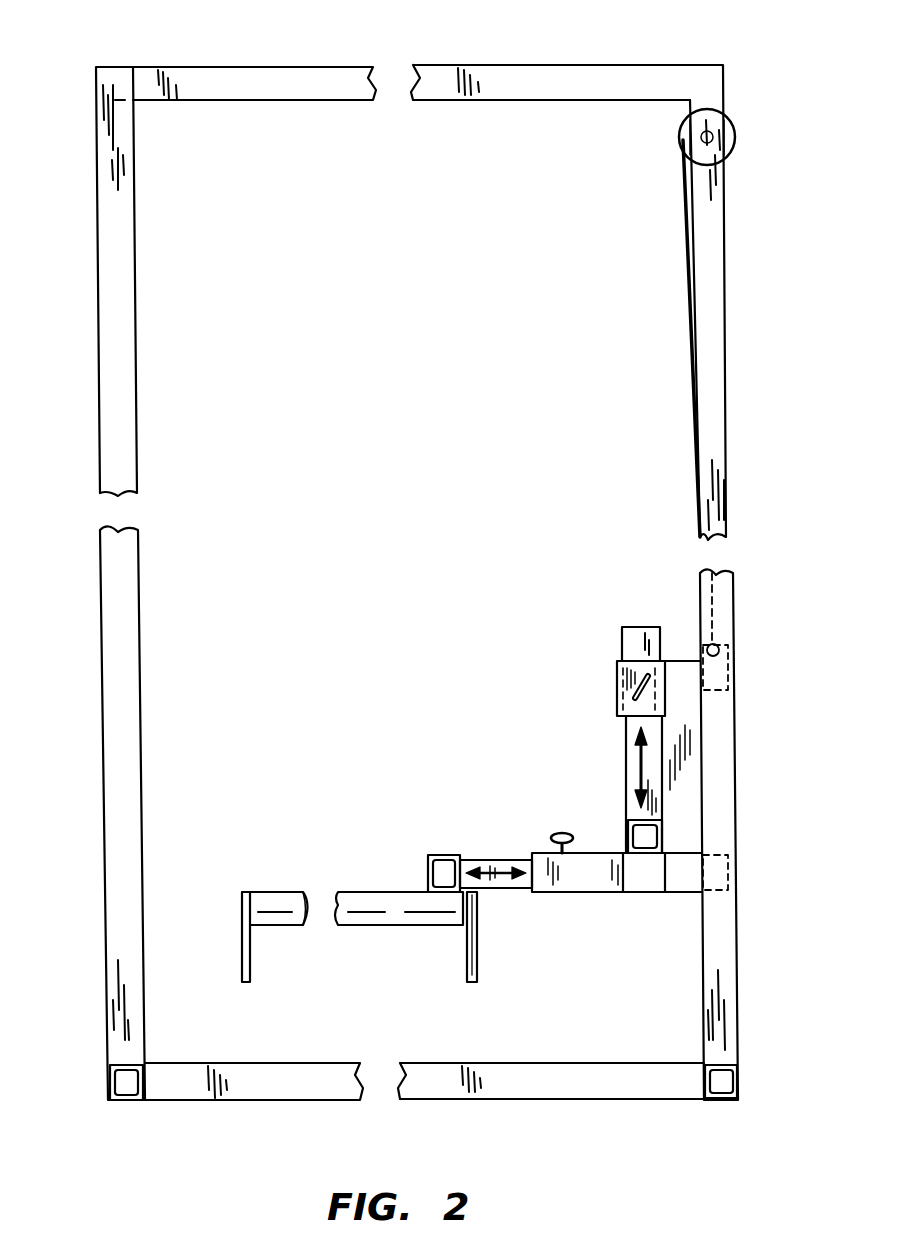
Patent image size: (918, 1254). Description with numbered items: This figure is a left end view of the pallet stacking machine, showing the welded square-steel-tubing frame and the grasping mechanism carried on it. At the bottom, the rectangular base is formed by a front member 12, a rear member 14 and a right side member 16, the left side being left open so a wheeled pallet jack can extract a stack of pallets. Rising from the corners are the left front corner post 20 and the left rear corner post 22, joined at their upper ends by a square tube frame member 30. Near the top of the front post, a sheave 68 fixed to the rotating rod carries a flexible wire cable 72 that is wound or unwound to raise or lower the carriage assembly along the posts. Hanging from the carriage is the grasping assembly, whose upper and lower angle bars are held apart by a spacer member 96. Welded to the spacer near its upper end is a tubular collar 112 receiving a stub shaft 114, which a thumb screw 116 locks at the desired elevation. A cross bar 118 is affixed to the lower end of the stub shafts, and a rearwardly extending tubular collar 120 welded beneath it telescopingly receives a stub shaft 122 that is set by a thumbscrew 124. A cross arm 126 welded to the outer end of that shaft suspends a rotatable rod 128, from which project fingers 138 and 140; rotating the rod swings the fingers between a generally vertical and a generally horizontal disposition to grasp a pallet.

The front member 12 is at (738, 1078).
The rear member 14 is at (108, 1082).
The right side member 16 is at (535, 1062).
The left front corner post 20 is at (735, 790).
The left rear corner post 22 is at (100, 370).
The square tube frame member 30 is at (458, 66).
The sheave 68 is at (730, 125).
The wire cable 72 is at (684, 198).
The spacer member 96 is at (688, 717).
The tubular collar 112 is at (618, 692).
The stub shaft 114 is at (626, 745).
The thumb screw 116 is at (632, 672).
The cross bar 118 is at (628, 835).
The tubular collar 120 is at (600, 888).
The stub shaft 122 is at (482, 869).
The thumbscrew 124 is at (560, 833).
The cross arm 126 is at (430, 862).
The rotatable rod 128 is at (368, 925).
The finger 138 is at (240, 960).
The finger 140 is at (478, 978).